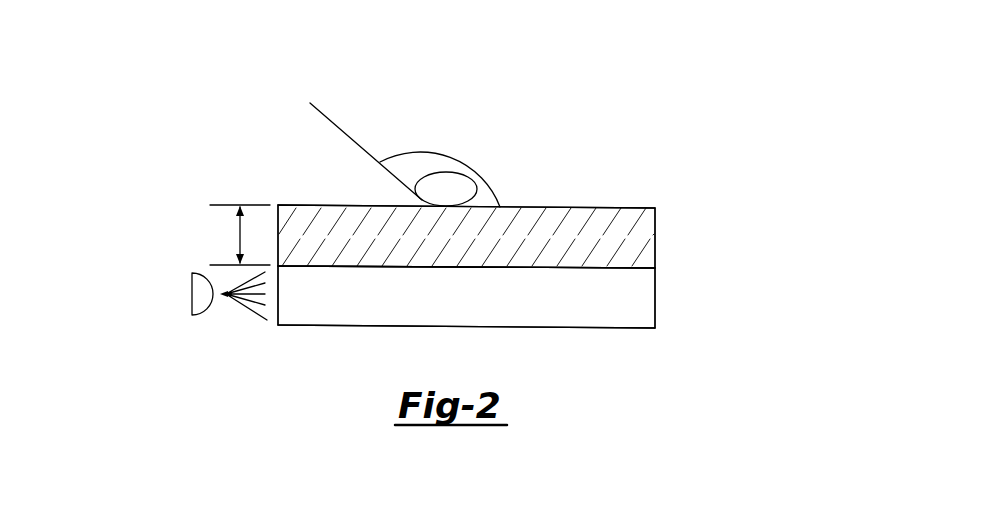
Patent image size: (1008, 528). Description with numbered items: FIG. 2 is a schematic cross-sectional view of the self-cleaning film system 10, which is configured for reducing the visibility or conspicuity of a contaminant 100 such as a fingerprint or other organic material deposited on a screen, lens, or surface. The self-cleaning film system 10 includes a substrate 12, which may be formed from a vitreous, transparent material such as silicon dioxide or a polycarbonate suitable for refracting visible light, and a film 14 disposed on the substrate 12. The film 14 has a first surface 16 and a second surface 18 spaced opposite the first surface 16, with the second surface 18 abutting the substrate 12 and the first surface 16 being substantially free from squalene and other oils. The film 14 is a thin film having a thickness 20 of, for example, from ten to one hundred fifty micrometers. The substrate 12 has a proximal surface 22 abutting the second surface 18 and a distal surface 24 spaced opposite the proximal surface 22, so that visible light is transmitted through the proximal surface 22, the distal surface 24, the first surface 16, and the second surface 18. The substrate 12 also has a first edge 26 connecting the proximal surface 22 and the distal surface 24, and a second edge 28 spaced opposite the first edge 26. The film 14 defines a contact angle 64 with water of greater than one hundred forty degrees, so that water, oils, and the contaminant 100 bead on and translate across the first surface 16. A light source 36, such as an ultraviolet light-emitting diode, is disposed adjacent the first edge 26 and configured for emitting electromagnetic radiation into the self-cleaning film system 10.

The self-cleaning film system 10 is at (243, 130).
The substrate 12 is at (645, 288).
The film 14 is at (645, 245).
The first surface 16 is at (581, 208).
The second surface 18 is at (494, 268).
The thickness 20 is at (238, 236).
The proximal surface 22 is at (403, 266).
The distal surface 24 is at (570, 327).
The first edge 26 is at (277, 324).
The second edge 28 is at (657, 306).
The light source 36 is at (190, 292).
The contact angle 64 is at (450, 156).
The contaminant 100 is at (433, 172).